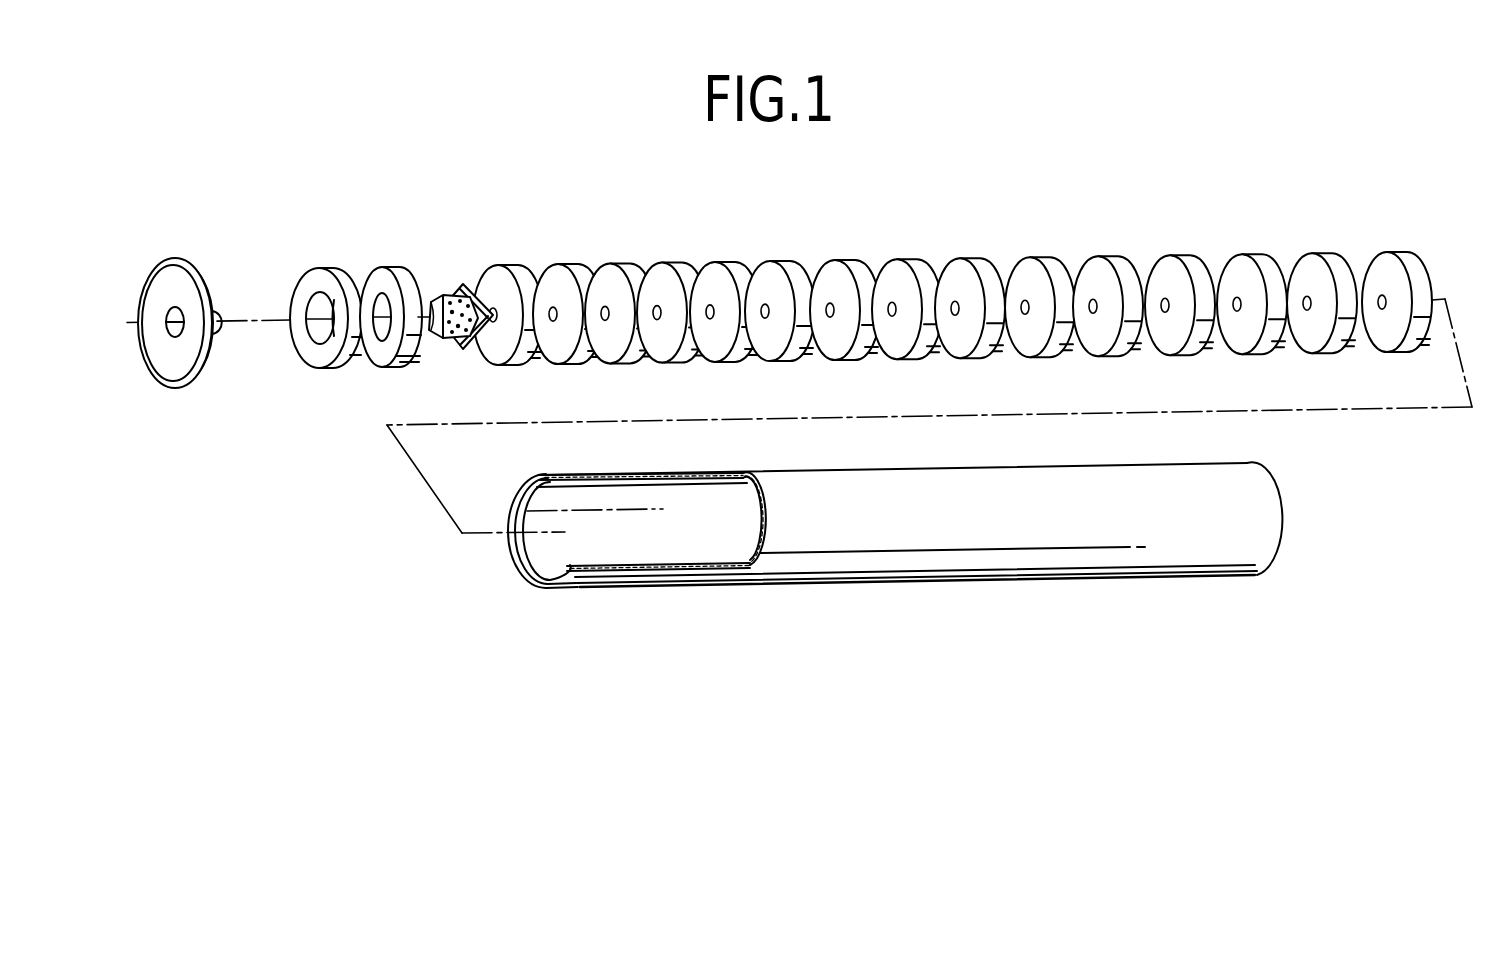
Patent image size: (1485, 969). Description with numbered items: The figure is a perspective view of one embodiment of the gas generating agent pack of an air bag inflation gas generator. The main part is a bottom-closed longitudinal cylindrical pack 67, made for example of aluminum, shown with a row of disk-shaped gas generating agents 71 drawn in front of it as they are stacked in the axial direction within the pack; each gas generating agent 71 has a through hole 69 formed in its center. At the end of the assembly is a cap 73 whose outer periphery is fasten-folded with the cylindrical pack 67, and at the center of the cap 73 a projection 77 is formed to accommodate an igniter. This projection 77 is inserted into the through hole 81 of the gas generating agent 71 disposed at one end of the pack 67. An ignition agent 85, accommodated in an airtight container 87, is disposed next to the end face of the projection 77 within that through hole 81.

The cylindrical pack 67 is at (929, 538).
The through hole 69 is at (888, 301).
The gas generating agents 71 is at (960, 275).
The cap 73 is at (180, 273).
The projection 77 is at (219, 334).
The through hole 81 is at (380, 323).
The ignition agent 85 is at (449, 293).
The airtight container 87 is at (467, 276).